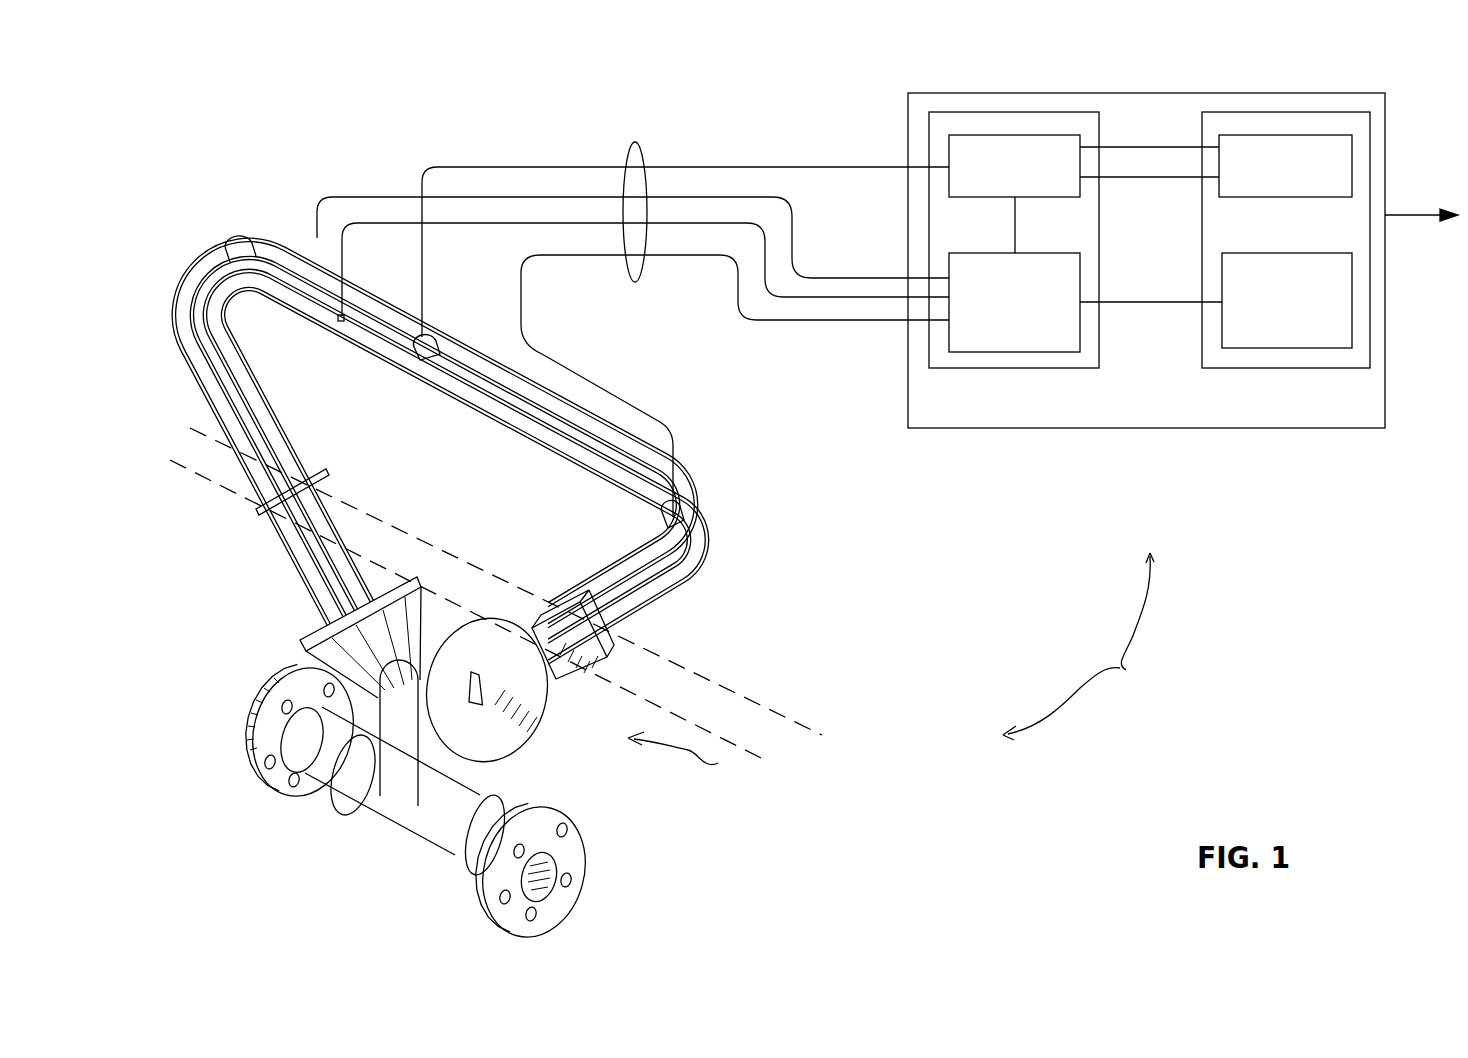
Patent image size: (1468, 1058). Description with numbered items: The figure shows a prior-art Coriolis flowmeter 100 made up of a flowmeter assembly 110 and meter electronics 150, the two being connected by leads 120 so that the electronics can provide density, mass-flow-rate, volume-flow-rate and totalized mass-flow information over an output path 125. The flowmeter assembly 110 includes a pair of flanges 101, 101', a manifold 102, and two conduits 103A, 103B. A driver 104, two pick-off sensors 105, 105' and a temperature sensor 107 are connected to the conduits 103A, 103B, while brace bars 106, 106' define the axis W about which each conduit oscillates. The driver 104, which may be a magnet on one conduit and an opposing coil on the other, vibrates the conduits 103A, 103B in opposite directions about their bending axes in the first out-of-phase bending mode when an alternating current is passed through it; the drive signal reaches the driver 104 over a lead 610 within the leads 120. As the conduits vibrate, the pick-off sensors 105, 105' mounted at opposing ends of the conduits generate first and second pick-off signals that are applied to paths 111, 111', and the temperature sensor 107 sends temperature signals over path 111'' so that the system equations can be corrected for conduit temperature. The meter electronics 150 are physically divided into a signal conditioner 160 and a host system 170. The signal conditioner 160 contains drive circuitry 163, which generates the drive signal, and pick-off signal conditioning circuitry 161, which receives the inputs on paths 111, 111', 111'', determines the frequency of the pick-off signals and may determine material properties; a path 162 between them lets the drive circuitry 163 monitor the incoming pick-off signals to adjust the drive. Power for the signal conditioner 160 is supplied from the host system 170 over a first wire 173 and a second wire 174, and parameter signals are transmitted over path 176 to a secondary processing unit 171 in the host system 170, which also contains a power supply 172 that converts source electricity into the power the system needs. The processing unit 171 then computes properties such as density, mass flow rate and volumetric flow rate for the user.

The Coriolis flowmeter 100 is at (1087, 646).
The flange 101 is at (253, 732).
The flange 101' is at (563, 871).
The manifold 102 is at (396, 762).
The conduit 103A is at (376, 341).
The conduit 103B is at (514, 380).
The driver 104 is at (402, 336).
The pick-off sensor 105 is at (222, 220).
The pick-off sensor 105' is at (732, 513).
The brace bar 106 is at (259, 503).
The brace bar 106' is at (581, 609).
The temperature sensor 107 is at (334, 322).
The flowmeter assembly 110 is at (673, 755).
The path 111 is at (633, 237).
The path 111' is at (735, 386).
The path 111'' is at (645, 290).
The leads 120 is at (625, 150).
The path 125 is at (1446, 208).
The meter electronics 150 is at (906, 121).
The signal conditioner 160 is at (1024, 368).
The pick-off signal conditioning circuitry 161 is at (1081, 262).
The path 162 is at (1017, 208).
The drive circuitry 163 is at (990, 198).
The host system 170 is at (1292, 368).
The secondary processing unit 171 is at (1294, 253).
The power supply 172 is at (1272, 198).
The first wire 173 is at (1158, 146).
The second wire 174 is at (1158, 178).
The path 176 is at (1148, 303).
The drive signal lead 610 is at (716, 166).
The axis W is at (503, 594).